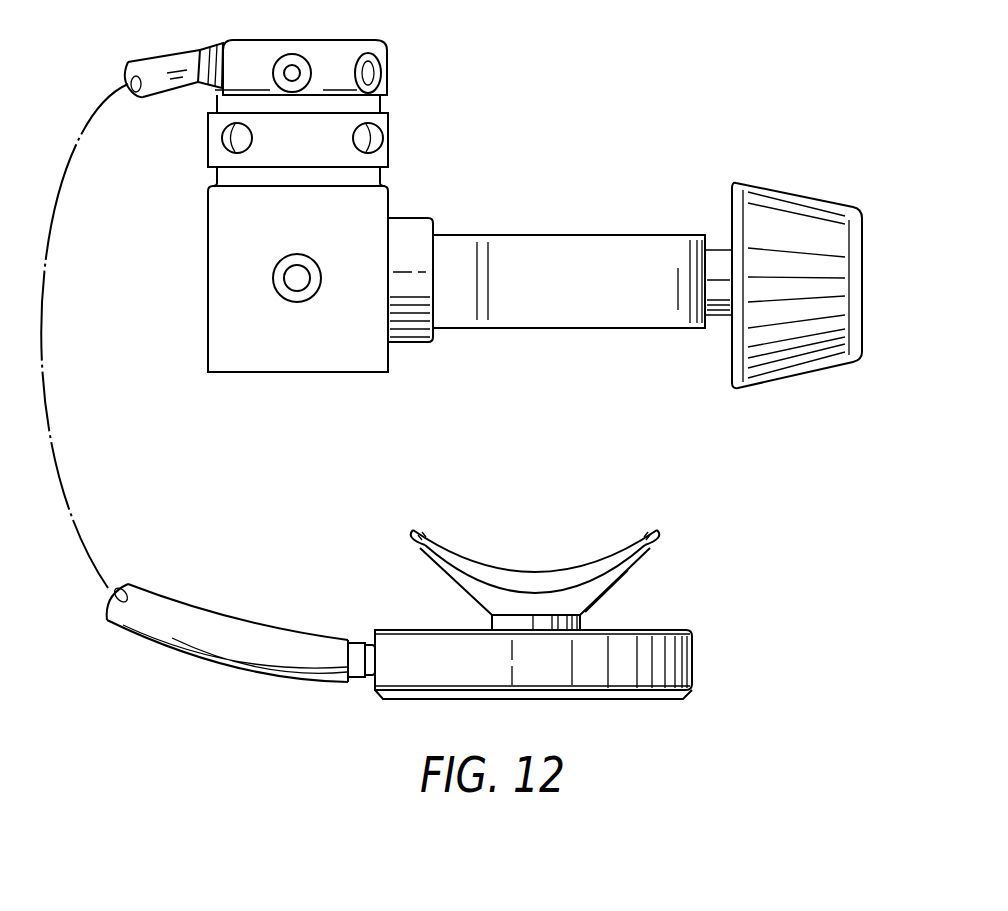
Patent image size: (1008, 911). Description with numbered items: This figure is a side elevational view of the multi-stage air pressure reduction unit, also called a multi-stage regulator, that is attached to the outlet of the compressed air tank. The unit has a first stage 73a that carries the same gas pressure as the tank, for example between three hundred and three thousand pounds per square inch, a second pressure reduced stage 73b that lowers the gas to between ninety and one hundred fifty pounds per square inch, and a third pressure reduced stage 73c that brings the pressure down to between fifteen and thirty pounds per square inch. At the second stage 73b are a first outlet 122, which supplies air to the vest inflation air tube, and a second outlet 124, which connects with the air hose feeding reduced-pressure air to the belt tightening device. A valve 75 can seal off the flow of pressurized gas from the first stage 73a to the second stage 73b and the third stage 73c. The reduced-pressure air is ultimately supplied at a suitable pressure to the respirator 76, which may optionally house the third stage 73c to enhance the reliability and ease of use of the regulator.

The first stage 73a is at (338, 343).
The second pressure reduced stage 73b is at (390, 128).
The third pressure reduced stage 73c is at (335, 48).
The first outlet 122 is at (232, 138).
The second outlet 124 is at (388, 155).
The valve 75 is at (783, 218).
The respirator 76 is at (695, 655).